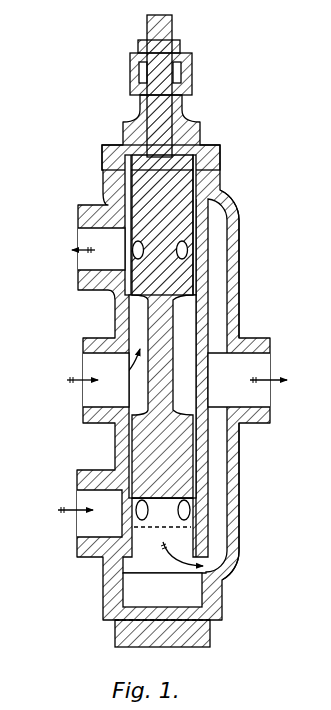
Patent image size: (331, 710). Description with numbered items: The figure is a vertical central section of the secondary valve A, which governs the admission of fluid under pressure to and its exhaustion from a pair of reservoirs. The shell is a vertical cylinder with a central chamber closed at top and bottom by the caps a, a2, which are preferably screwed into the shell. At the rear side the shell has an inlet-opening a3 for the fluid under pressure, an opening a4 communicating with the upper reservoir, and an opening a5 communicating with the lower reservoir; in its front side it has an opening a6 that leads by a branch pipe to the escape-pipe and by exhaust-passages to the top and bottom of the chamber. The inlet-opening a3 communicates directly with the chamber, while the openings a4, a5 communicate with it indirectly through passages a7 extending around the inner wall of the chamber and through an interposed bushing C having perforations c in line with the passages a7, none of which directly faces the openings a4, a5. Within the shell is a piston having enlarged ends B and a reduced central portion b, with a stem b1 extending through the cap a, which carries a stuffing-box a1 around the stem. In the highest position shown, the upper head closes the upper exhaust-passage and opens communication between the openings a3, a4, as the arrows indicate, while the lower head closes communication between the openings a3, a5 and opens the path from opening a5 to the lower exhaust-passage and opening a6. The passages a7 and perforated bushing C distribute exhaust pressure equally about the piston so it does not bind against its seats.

The cap a is at (173, 357).
The stuffing-box a1 is at (172, 67).
The cap a2 is at (179, 633).
The inlet-opening a3 is at (92, 380).
The opening a4 is at (87, 256).
The opening a5 is at (85, 515).
The opening a6 is at (249, 385).
The passages a7 is at (175, 386).
The secondary valve A is at (238, 385).
The enlarged ends of piston B is at (207, 153).
The reduced central portion b is at (176, 343).
The stem b1 is at (169, 85).
The perforations c is at (148, 522).
The bushing C is at (138, 566).